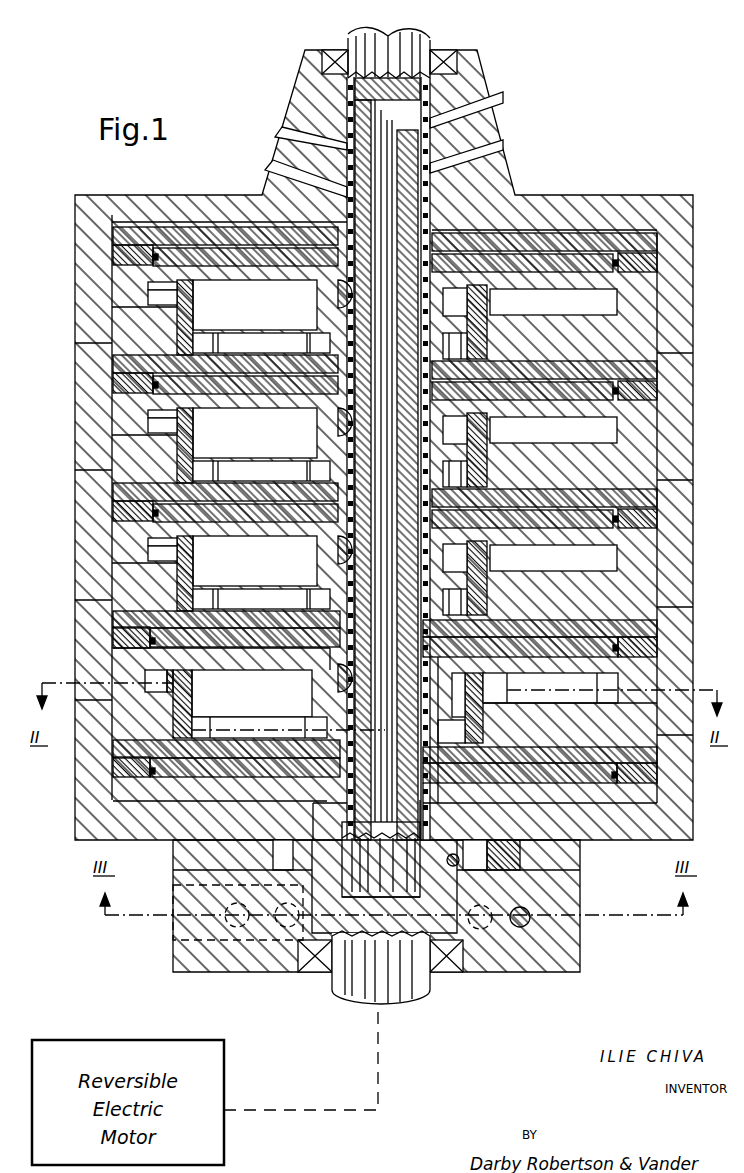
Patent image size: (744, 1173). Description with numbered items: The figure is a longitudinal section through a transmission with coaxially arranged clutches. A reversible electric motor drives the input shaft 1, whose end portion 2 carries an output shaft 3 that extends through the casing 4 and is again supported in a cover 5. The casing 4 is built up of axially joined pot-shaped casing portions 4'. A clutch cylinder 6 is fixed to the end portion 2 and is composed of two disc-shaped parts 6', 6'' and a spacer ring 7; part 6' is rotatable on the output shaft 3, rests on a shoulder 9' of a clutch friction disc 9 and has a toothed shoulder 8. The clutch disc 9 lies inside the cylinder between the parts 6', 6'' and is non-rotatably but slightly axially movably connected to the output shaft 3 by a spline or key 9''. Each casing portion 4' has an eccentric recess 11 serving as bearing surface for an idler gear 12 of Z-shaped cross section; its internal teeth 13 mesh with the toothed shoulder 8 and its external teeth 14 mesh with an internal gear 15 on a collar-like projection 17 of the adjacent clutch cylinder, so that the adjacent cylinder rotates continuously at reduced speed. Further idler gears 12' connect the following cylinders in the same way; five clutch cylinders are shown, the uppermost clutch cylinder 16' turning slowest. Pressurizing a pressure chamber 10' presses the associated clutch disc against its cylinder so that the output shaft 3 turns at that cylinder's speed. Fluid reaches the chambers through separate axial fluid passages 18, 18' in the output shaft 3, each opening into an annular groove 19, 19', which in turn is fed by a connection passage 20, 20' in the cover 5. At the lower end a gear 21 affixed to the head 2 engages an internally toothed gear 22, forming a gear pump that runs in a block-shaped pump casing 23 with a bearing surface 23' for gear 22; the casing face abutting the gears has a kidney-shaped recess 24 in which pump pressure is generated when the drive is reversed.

The input shaft 1 is at (353, 990).
The end portion of the input shaft 2 is at (380, 906).
The output shaft 3 is at (415, 878).
The casing 4 is at (394, 445).
The casing portion 4' is at (686, 607).
The cover 5 is at (498, 188).
The clutch cylinder 6 is at (567, 811).
The disc-shaped part of clutch cylinder 6' is at (525, 749).
The disc-shaped part of clutch cylinder 6'' is at (600, 715).
The spacer ring 7 is at (650, 779).
The toothed shoulder 8 is at (445, 732).
The clutch friction disc 9 is at (301, 557).
The shoulder of clutch disc 9' is at (410, 808).
The spline or key 9'' is at (342, 807).
The pressure chamber 10' is at (385, 513).
The eccentric recess 11 is at (173, 712).
The idler gear 12 is at (198, 704).
The idler gear 12' is at (332, 447).
The internal teeth 13 is at (212, 723).
The external teeth 14 is at (173, 683).
The internal gear 15 is at (133, 692).
The uppermost clutch cylinder 16' is at (404, 496).
The collar-like projection 17 is at (130, 688).
The fluid passage 18 is at (390, 464).
The fluid passage 18' is at (360, 469).
The annular groove 19 is at (441, 458).
The annular groove 19' is at (328, 457).
The connection passage 20 is at (482, 131).
The connection passage 20' is at (298, 143).
The gear 21 is at (474, 864).
The internally toothed gear 22 is at (278, 853).
The pump casing 23 is at (394, 912).
The bearing surface 23' is at (555, 855).
The kidney-shaped recess 24 is at (275, 878).